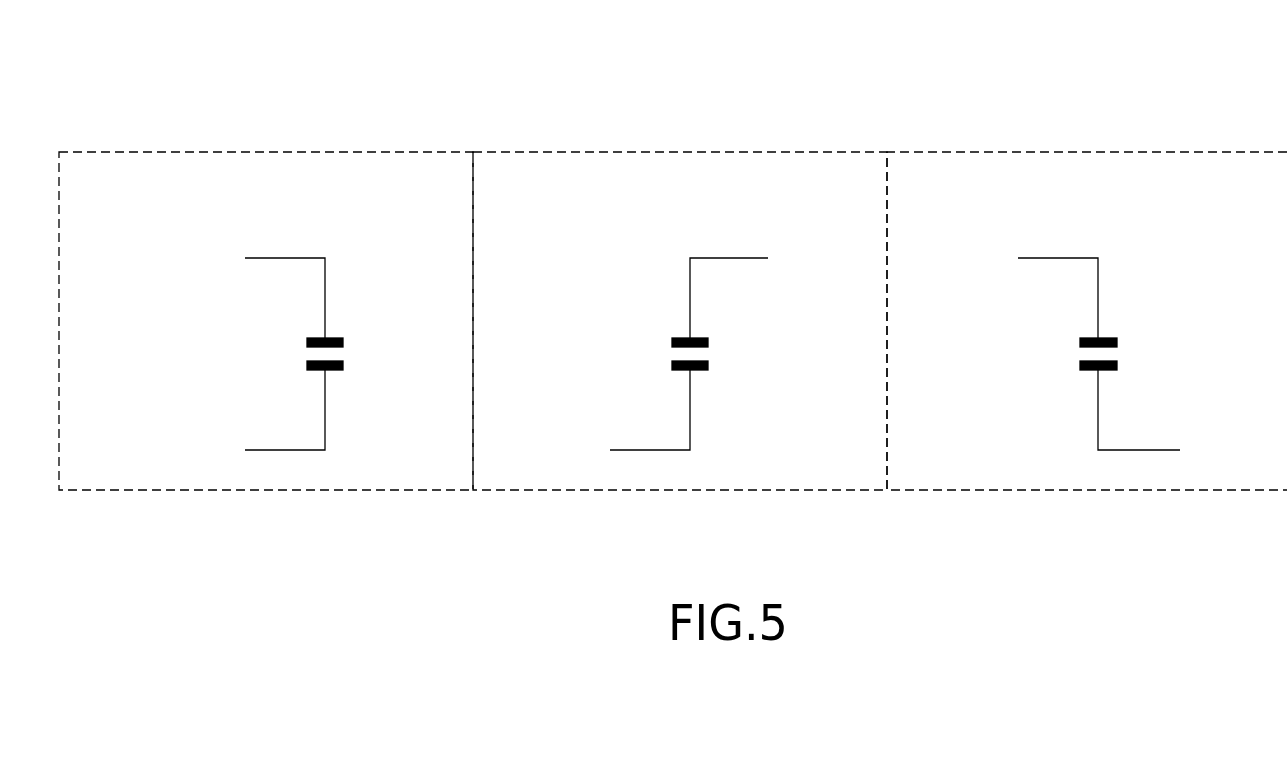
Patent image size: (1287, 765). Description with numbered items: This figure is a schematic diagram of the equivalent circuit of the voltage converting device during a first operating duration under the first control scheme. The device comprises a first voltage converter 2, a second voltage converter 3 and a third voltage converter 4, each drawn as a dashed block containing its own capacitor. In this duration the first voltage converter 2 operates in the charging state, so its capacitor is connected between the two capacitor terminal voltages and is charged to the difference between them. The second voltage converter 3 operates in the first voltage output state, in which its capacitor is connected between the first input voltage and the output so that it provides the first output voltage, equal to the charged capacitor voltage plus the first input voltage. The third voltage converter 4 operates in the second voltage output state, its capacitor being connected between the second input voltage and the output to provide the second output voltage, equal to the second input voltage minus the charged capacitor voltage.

The first voltage converter 2 is at (276, 148).
The second voltage converter 3 is at (682, 148).
The third voltage converter 4 is at (1089, 148).